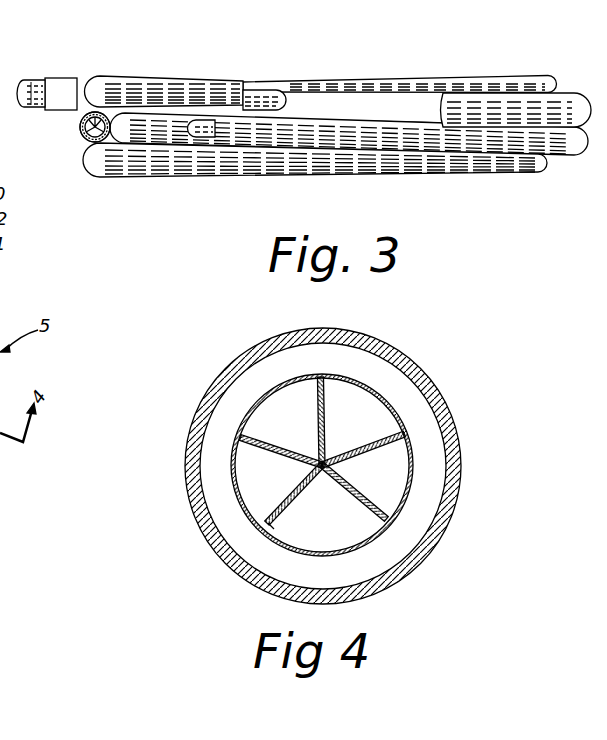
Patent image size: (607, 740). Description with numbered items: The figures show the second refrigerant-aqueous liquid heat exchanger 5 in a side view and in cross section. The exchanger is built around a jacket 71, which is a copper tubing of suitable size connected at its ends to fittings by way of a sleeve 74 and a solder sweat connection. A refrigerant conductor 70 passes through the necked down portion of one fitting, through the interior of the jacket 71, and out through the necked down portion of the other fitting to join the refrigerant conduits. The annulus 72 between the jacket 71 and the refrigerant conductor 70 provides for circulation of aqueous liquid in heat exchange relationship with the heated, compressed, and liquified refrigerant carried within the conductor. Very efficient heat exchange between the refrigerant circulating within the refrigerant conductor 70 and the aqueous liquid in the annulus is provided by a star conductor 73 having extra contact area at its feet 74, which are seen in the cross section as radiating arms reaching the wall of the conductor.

In FIG. 3, the second refrigerant-aqueous liquid heat exchanger 5 is at (263, 183).
In FIG. 3, the refrigerant conductor 70 is at (262, 95).
In FIG. 4, the refrigerant conductor 70 is at (413, 473).
In FIG. 4, the jacket 71 is at (456, 428).
In FIG. 3, the annulus 72 is at (85, 138).
In FIG. 4, the annulus 72 is at (405, 400).
In FIG. 3, the star conductor 73 is at (80, 124).
In FIG. 4, the star conductor 73 is at (287, 447).
In FIG. 4, the feet 74 is at (388, 513).